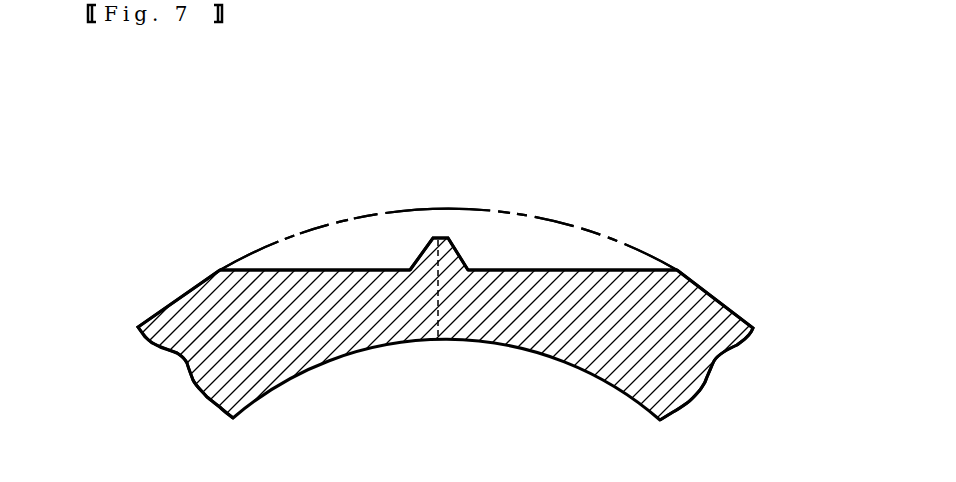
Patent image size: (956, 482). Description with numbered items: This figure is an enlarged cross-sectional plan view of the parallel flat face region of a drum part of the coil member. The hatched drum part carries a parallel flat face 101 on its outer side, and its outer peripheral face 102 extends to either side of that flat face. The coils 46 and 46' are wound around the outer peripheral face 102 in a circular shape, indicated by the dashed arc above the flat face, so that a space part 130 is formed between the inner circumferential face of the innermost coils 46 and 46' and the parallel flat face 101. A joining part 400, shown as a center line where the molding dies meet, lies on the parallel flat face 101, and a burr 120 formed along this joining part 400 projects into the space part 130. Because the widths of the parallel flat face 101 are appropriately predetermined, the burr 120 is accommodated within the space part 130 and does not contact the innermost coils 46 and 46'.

The coil 46 is at (448, 175).
The coil 46' is at (448, 175).
The parallel flat face 101 is at (370, 277).
The outer peripheral face 102 is at (163, 303).
The burr 120 is at (452, 252).
The space part 130 is at (352, 237).
The joining part 400 is at (438, 312).